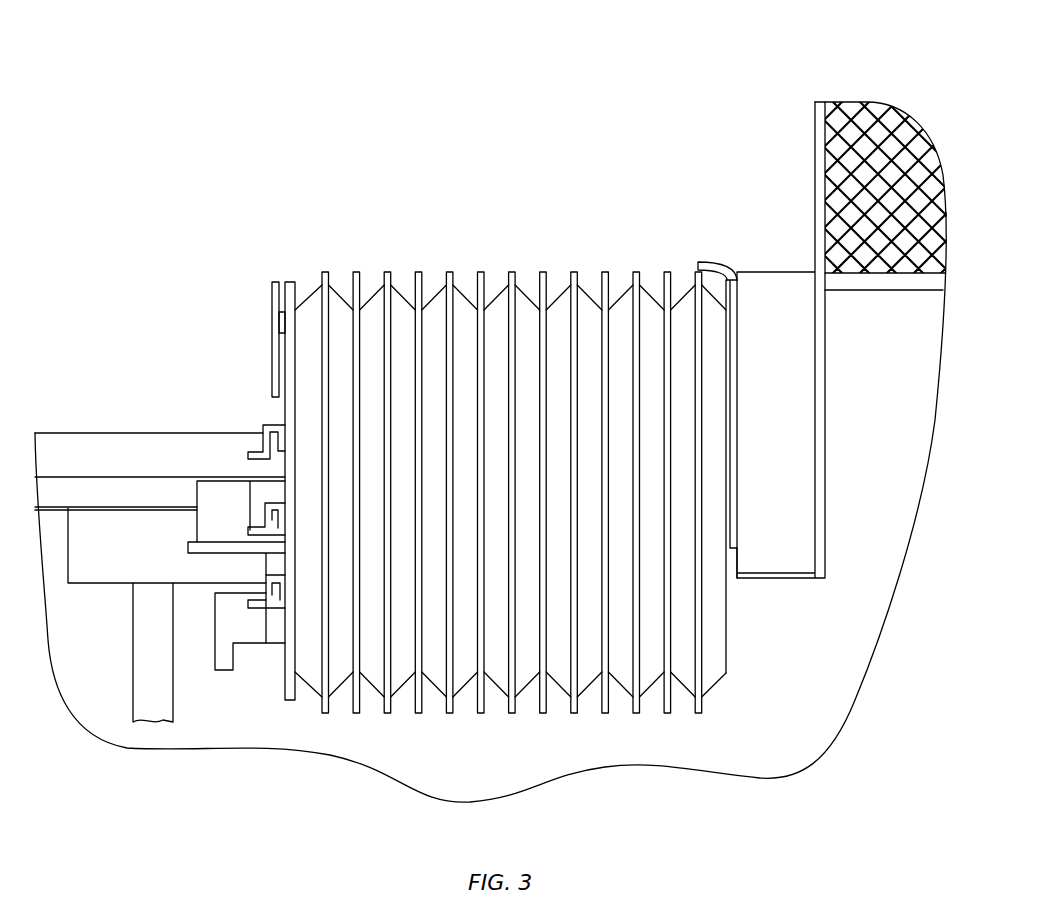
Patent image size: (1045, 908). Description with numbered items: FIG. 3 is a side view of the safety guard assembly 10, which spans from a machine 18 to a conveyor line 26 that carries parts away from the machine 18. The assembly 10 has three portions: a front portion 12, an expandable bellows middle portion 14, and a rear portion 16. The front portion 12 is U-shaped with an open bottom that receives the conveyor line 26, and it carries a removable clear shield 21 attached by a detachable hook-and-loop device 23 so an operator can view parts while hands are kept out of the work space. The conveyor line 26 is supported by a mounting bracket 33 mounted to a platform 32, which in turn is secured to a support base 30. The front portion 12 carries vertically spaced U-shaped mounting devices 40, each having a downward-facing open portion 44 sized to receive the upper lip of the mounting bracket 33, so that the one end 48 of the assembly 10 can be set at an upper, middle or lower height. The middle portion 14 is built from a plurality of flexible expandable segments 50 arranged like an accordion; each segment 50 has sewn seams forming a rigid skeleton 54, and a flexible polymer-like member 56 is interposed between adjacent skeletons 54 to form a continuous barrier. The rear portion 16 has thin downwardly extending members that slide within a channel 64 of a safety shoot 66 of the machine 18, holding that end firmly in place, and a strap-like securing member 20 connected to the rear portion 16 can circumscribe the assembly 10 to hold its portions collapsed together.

The safety guard assembly 10 is at (343, 154).
The front portion 12 is at (287, 277).
The middle portion 14 is at (573, 263).
The rear portion 16 is at (735, 315).
The machine 18 is at (876, 126).
The securing member 20 is at (712, 262).
The shield 21 is at (282, 328).
The detachable device 23 is at (293, 330).
The conveyor line 26 is at (149, 468).
The support base 30 is at (97, 585).
The platform 32 is at (212, 553).
The mounting bracket 33 is at (239, 520).
The mounting devices 40 is at (270, 424).
The open portion 44 is at (278, 607).
The one end 48 is at (272, 224).
The segments 50 is at (447, 718).
The skeleton 54 is at (356, 287).
The flexible member 56 is at (368, 297).
The channel 64 is at (732, 530).
The safety shoot 66 is at (782, 447).